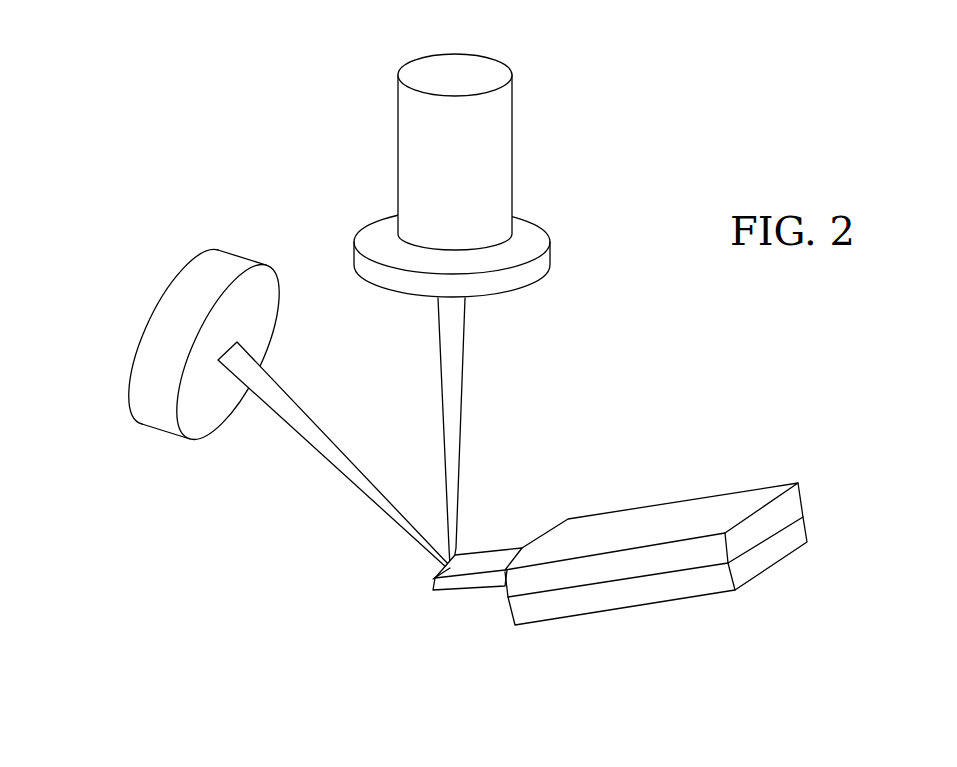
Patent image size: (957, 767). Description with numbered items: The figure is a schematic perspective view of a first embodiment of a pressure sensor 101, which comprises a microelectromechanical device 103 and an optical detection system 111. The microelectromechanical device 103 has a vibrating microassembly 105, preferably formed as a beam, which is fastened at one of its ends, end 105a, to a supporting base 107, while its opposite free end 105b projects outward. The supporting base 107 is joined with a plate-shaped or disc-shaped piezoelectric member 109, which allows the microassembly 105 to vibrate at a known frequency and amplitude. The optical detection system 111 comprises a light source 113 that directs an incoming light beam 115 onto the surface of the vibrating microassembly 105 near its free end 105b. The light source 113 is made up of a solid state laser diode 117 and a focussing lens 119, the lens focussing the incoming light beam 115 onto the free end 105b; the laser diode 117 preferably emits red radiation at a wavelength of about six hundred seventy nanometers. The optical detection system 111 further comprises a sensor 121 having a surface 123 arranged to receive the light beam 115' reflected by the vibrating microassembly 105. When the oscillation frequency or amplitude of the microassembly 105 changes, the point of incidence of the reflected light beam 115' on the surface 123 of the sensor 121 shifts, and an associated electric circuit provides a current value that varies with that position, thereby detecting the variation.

The pressure sensor 101 is at (262, 162).
The microelectromechanical device 103 is at (676, 501).
The vibrating microassembly 105 is at (423, 552).
The end 105a is at (503, 588).
The free end 105b is at (432, 583).
The supporting base 107 is at (700, 522).
The piezoelectric member 109 is at (767, 552).
The optical detection system 111 is at (267, 482).
The light source 113 is at (383, 185).
The incoming light beam 115 is at (510, 432).
The reflected light beam 115' is at (334, 455).
The solid state laser diode 117 is at (495, 160).
The focussing lens 119 is at (538, 268).
The sensor 121 is at (157, 300).
The surface 123 is at (277, 282).